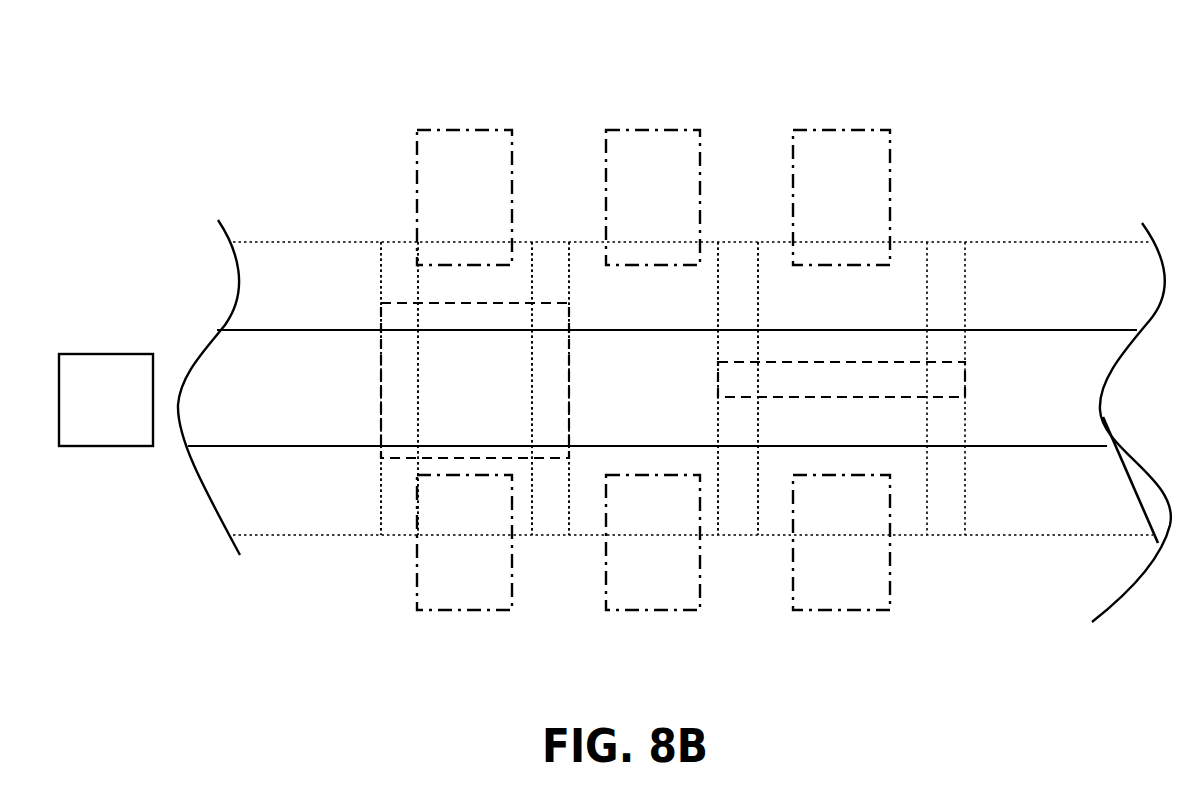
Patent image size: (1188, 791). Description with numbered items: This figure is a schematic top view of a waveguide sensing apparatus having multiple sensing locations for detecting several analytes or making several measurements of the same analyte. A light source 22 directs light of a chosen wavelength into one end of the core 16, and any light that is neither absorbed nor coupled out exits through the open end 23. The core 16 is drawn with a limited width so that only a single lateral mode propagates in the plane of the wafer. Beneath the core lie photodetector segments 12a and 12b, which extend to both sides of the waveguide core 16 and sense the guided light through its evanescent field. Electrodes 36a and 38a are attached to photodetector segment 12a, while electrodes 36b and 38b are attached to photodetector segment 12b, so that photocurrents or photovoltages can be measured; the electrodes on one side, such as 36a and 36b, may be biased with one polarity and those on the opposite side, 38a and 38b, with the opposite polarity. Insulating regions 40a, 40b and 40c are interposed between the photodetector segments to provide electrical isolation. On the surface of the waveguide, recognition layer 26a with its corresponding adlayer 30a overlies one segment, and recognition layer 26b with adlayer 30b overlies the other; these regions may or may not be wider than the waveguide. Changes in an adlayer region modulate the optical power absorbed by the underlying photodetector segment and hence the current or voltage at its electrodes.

The core 16 is at (286, 421).
The light source 22 is at (118, 344).
The end 23 is at (1091, 619).
The photodetector segment 12a is at (432, 275).
The photodetector segment 12b is at (800, 283).
The electrode 36a is at (467, 142).
The electrode 36b is at (852, 142).
The electrode 38a is at (445, 612).
The electrode 38b is at (843, 612).
The insulating region 40a is at (393, 521).
The insulating region 40b is at (553, 522).
The insulating region 40c is at (740, 522).
The recognition layer 26a is at (326, 463).
The adlayer 30a is at (442, 411).
The recognition layer 26b is at (937, 260).
The adlayer 30b is at (955, 373).